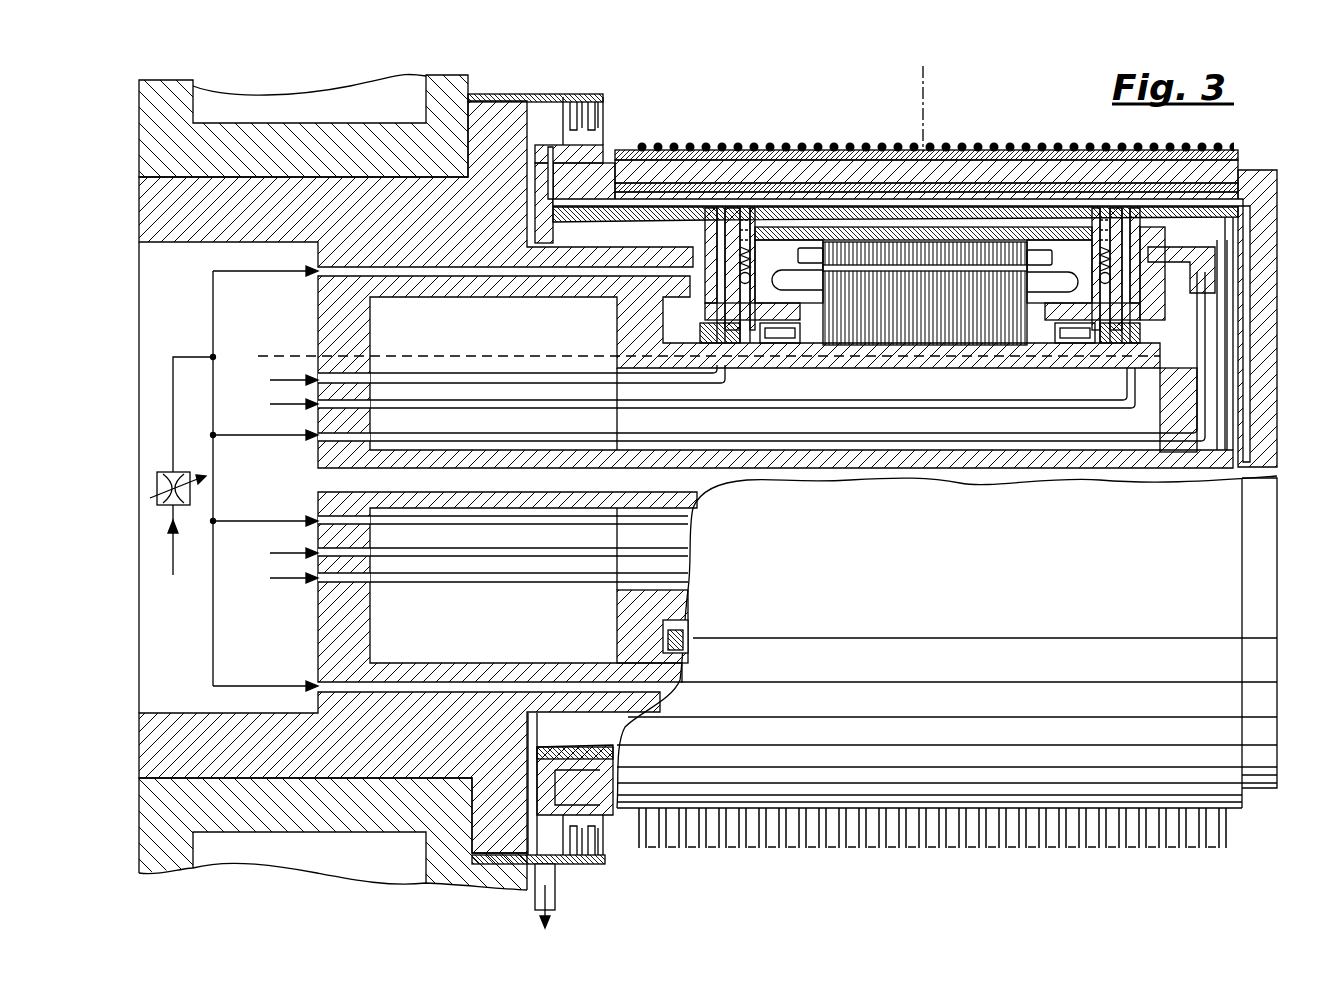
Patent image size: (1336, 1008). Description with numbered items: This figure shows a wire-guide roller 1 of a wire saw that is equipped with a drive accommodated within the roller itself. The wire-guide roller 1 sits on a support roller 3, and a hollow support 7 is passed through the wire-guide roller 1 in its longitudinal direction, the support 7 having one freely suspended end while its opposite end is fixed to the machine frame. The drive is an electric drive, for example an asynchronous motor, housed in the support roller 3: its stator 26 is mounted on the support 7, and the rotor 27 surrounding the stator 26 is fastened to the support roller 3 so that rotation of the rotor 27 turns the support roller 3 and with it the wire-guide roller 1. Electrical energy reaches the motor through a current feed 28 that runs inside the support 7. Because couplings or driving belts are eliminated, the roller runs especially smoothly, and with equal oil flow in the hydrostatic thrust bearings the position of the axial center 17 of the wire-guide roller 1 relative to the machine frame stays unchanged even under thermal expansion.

The wire-guide roller 1 is at (779, 142).
The support roller 3 is at (836, 188).
The support 7 is at (940, 365).
The axial center 17 is at (927, 100).
The stator 26 is at (925, 293).
The rotor 27 is at (985, 255).
The current feed 28 is at (293, 356).